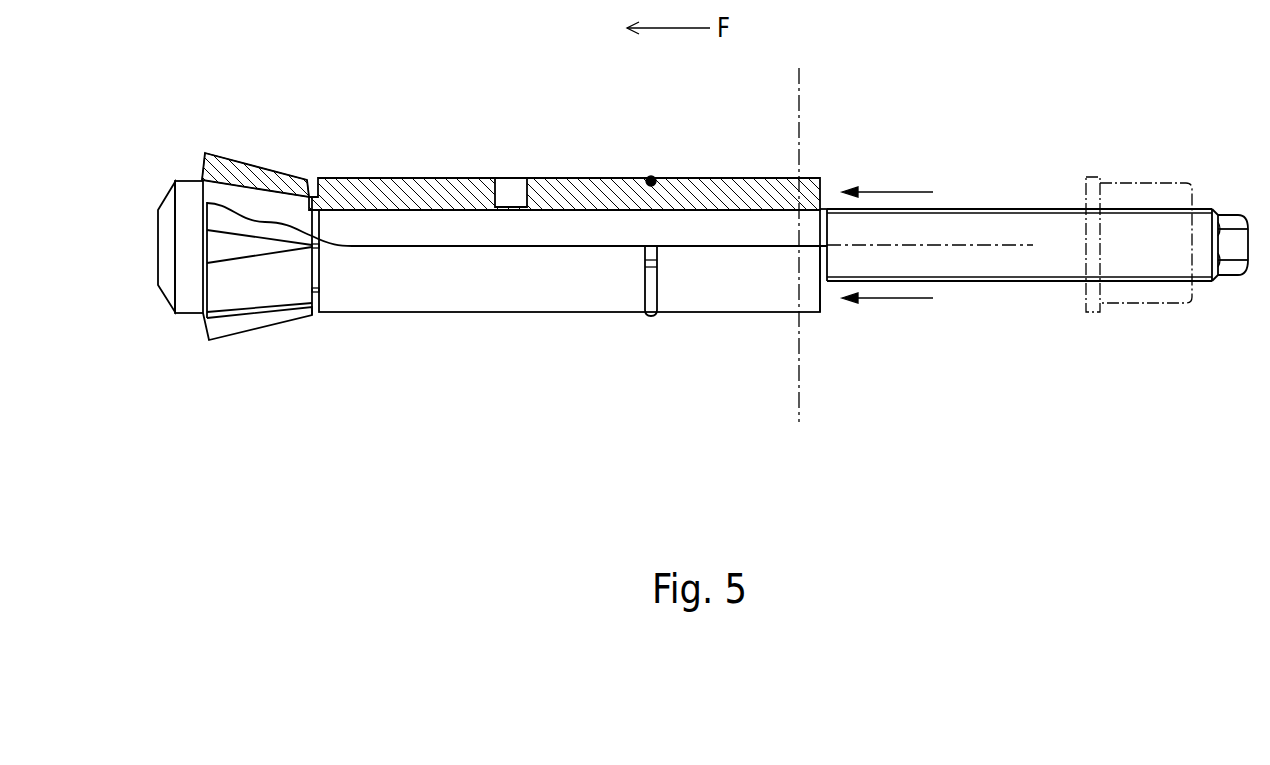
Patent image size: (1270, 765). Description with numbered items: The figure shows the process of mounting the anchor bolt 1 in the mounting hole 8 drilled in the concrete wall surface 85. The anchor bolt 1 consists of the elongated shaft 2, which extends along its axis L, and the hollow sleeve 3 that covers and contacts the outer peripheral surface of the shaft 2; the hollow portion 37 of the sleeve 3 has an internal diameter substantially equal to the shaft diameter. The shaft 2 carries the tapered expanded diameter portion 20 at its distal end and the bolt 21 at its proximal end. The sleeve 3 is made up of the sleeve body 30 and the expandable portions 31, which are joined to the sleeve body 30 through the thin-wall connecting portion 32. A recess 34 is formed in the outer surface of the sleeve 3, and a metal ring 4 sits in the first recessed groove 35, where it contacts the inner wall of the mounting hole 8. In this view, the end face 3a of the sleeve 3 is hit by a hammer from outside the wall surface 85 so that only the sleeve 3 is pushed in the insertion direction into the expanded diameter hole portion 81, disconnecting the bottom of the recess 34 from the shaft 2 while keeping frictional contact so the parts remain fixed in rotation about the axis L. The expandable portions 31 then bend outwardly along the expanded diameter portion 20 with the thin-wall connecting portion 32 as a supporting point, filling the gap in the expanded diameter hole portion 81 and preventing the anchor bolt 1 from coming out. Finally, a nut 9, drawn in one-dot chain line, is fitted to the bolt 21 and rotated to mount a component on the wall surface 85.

The anchor bolt 1 is at (466, 342).
The shaft 2 is at (577, 230).
The hollow sleeve 3 is at (375, 387).
The end face 3a is at (823, 300).
The metal ring 4 is at (651, 176).
The mounting hole 8 is at (255, 175).
The expanded diameter hole portion 81 is at (237, 155).
The nut 9 is at (1150, 183).
The expanded diameter portion 20 is at (265, 202).
The bolt 21 is at (948, 228).
The sleeve body 30 is at (363, 303).
The expandable portions 31 is at (250, 290).
The thin-wall connecting portion 32 is at (313, 298).
The recess 34 is at (514, 193).
The first recessed groove 35 is at (651, 306).
The hollow portion 37 is at (753, 222).
The concrete wall surface 85 is at (800, 107).
The axis L is at (1023, 243).